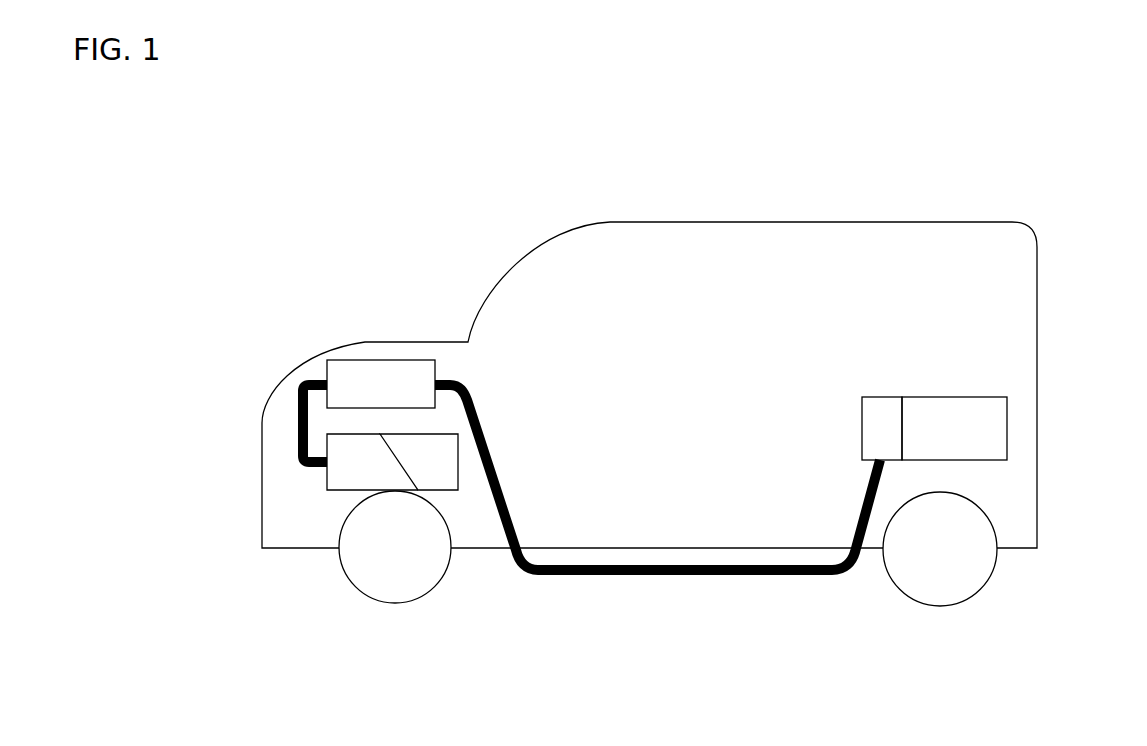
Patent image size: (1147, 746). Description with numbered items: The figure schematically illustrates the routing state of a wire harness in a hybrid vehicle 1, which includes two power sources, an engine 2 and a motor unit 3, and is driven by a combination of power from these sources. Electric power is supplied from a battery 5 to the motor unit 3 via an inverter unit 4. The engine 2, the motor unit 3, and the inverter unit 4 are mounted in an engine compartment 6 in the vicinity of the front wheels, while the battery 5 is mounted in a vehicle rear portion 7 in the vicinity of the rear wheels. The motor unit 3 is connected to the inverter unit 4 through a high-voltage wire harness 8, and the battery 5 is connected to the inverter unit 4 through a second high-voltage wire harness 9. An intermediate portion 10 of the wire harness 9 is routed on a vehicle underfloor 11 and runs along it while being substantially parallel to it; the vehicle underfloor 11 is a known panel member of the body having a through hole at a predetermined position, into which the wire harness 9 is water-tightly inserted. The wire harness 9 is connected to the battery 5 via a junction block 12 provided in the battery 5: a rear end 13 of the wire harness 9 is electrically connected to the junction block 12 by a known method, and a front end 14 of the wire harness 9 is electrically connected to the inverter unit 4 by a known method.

The hybrid vehicle 1 is at (393, 243).
The engine 2 is at (442, 470).
The motor unit 3 is at (341, 470).
The inverter unit 4 is at (353, 375).
The battery 5 is at (960, 410).
The engine compartment 6 is at (282, 517).
The vehicle rear portion 7 is at (1010, 486).
The high-voltage wire harness 8 is at (294, 412).
The high-voltage wire harness 9 is at (591, 581).
The intermediate portion 10 is at (702, 577).
The vehicle underfloor 11 is at (790, 550).
The junction block 12 is at (870, 410).
The rear end 13 is at (870, 483).
The front end 14 is at (463, 384).